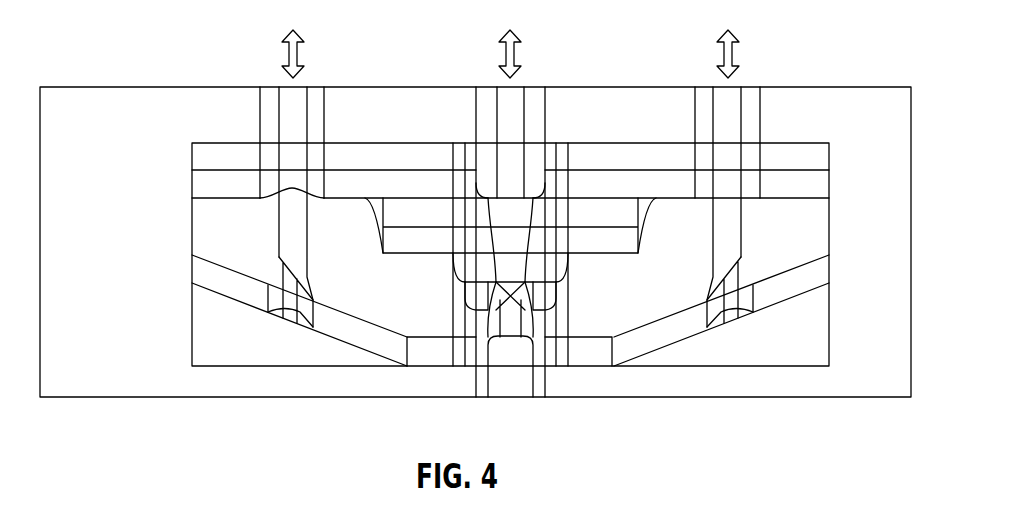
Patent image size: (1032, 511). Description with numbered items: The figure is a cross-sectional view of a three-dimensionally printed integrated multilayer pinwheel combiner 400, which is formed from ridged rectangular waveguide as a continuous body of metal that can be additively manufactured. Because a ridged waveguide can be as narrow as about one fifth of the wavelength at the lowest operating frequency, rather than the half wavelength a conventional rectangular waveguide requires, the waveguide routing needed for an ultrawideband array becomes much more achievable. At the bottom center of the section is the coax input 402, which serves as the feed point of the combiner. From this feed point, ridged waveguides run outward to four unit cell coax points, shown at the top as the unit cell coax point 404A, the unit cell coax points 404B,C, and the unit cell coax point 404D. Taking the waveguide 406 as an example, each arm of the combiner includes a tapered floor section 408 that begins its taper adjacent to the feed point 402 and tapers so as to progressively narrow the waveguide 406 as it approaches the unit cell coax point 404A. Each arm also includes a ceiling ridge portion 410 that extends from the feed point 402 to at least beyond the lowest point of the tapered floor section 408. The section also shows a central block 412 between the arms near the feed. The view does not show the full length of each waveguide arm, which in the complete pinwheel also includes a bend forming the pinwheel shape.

The 3D printed integrated multilayer pinwheel combiner 400 is at (140, 40).
The coax input 402 is at (511, 383).
The unit cell coax point 404A is at (327, 66).
The unit cell coax points 404B,C is at (539, 66).
The unit cell coax point 404D is at (751, 67).
The waveguide 406 is at (210, 222).
The tapered floor section 408 is at (207, 323).
The ceiling ridge portion 410 is at (427, 255).
The cross member block 412 is at (373, 215).